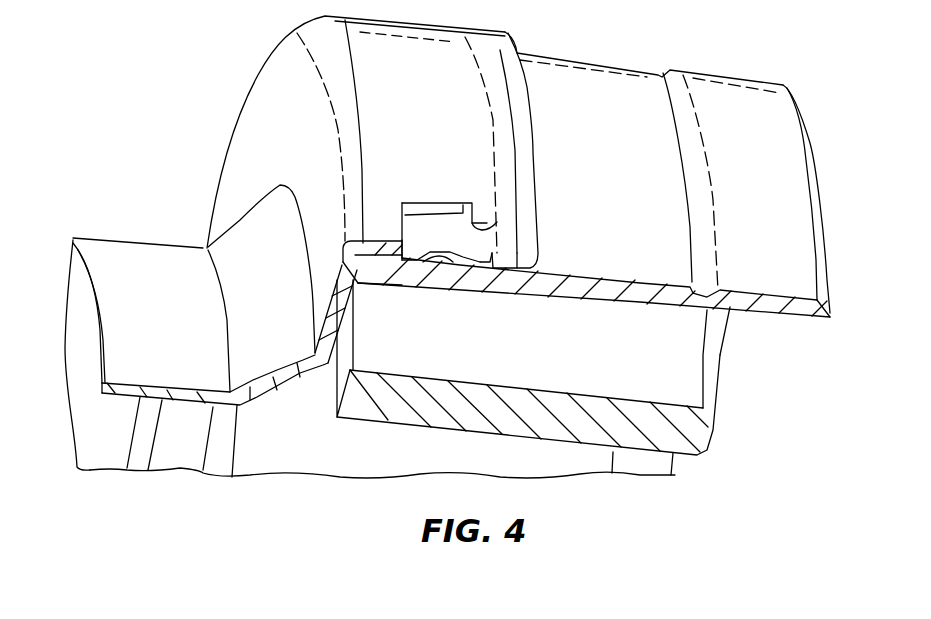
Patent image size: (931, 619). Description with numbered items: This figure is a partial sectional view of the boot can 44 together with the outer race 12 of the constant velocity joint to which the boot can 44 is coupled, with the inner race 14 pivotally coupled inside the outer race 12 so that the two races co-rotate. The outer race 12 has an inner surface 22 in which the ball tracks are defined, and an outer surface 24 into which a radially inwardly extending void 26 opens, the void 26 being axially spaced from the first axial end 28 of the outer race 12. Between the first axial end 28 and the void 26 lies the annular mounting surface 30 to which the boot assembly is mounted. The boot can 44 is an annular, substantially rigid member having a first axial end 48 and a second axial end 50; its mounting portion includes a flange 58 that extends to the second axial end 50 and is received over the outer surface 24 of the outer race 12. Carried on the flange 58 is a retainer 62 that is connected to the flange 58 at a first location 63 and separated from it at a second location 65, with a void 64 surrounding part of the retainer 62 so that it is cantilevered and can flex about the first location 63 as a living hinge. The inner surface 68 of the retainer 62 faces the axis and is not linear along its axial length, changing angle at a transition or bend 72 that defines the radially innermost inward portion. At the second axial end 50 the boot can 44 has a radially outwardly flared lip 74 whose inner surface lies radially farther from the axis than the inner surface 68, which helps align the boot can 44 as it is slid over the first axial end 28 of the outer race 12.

The outer race 12 is at (794, 307).
The inner race 14 is at (667, 427).
The inner surface 22 is at (655, 305).
The outer surface 24 is at (575, 95).
The void 26 is at (447, 258).
The first axial end 28 is at (353, 267).
The mounting surface 30 is at (458, 283).
The boot can 44 is at (270, 127).
The first axial end 48 is at (73, 240).
The second axial end 50 is at (527, 238).
The flange 58 is at (431, 118).
The retainer 62 is at (472, 200).
The first location 63 is at (476, 240).
The void 64 is at (497, 222).
The second location 65 is at (397, 235).
The inner surface 68 is at (460, 263).
The transition or bend 72 is at (412, 225).
The radially outwardly flared lip 74 is at (527, 242).